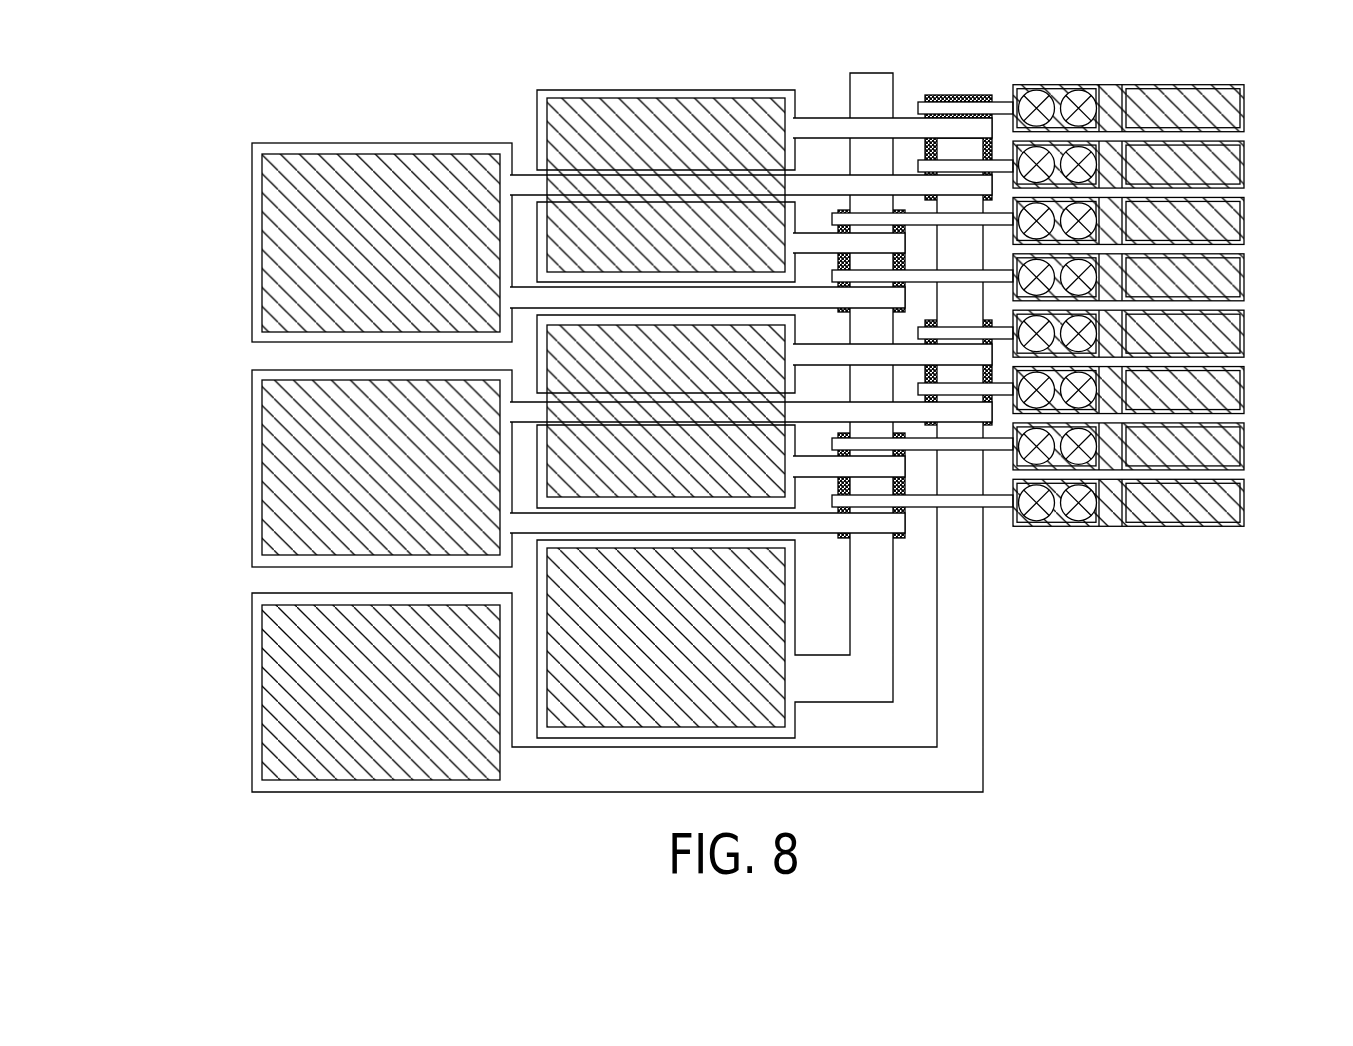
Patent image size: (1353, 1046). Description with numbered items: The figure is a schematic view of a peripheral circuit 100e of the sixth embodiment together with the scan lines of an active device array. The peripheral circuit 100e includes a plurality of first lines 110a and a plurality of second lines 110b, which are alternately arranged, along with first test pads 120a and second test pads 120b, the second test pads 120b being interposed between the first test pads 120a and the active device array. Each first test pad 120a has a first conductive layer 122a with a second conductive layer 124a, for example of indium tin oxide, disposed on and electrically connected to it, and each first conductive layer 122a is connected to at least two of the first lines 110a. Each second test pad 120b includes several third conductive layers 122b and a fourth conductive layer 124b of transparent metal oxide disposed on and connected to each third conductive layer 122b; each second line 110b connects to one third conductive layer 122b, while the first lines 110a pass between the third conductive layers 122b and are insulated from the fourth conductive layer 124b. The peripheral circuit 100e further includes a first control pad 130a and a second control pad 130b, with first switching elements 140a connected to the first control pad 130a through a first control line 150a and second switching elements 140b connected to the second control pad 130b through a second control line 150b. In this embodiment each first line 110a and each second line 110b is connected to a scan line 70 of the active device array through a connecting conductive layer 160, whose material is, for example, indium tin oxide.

The scan line 70 is at (1244, 505).
The connecting conductive layer 160 is at (1112, 517).
The peripheral circuit 100e is at (720, 454).
The first line 110a is at (890, 522).
The second line 110b is at (985, 423).
The first test pad 120a is at (310, 355).
The first conductive layer 122a is at (255, 196).
The second conductive layer 124a is at (295, 232).
The second test pad 120b is at (562, 281).
The third conductive layer 122b is at (578, 92).
The fourth conductive layer 124b is at (572, 130).
The first control pad 130a is at (620, 707).
The second control pad 130b is at (387, 758).
The first switching element 140a is at (892, 538).
The second switching element 140b is at (890, 468).
The first control line 150a is at (868, 677).
The second control line 150b is at (957, 763).